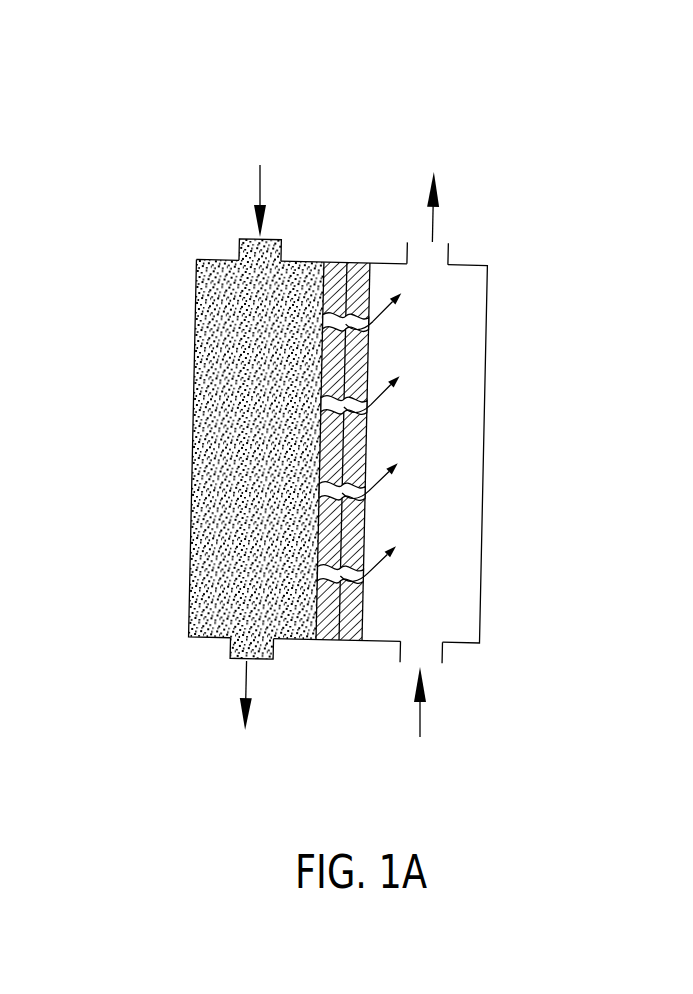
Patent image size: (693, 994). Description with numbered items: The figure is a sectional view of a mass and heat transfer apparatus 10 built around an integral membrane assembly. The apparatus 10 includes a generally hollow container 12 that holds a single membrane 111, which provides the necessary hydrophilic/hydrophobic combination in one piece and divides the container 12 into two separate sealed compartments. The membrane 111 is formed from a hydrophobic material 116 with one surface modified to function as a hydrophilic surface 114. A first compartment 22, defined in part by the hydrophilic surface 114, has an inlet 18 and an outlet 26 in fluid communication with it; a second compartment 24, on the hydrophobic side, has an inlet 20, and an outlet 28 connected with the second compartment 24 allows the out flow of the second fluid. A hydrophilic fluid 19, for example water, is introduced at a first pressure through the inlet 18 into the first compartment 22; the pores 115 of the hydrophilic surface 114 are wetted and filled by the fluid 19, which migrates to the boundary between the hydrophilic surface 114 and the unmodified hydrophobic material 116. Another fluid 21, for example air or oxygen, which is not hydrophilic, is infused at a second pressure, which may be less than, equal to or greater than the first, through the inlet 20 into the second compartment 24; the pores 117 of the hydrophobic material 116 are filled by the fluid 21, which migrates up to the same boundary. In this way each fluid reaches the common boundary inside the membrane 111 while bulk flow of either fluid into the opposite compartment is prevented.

The mass and heat transfer apparatus 10 is at (548, 197).
The container 12 is at (487, 308).
The inlet 18 is at (243, 243).
The hydrophilic fluid 19 is at (253, 190).
The inlet 20 is at (430, 650).
The fluid 21 is at (423, 690).
The first compartment 22 is at (265, 418).
The second compartment 24 is at (447, 437).
The outlet 26 is at (240, 657).
The outlet 28 is at (432, 252).
The single membrane 111 is at (347, 356).
The hydrophilic surface 114 is at (318, 467).
The pores 115 is at (330, 323).
The hydrophobic material 116 is at (362, 523).
The pores 117 is at (347, 324).